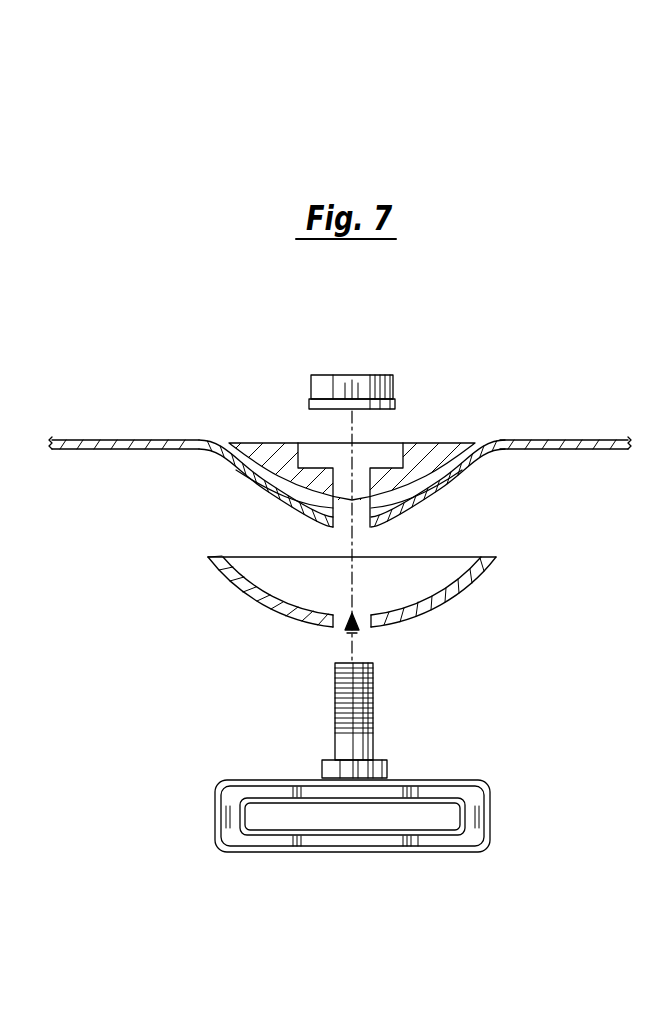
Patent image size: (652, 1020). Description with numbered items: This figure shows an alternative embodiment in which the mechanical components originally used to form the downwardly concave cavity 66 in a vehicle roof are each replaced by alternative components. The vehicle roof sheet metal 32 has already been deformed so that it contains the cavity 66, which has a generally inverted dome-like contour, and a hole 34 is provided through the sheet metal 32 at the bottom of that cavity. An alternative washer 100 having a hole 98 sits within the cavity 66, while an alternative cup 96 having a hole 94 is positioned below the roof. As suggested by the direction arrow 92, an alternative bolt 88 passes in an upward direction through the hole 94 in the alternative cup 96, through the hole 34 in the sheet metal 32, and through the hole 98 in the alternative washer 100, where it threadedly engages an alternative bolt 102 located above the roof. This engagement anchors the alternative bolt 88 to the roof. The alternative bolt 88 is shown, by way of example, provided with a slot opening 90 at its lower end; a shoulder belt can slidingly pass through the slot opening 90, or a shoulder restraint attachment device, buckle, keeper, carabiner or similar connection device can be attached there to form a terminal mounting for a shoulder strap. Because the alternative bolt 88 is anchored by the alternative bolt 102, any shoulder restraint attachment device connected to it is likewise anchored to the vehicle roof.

The vehicle roof sheet metal 32 is at (148, 440).
The hole in the sheet metal 34 is at (360, 530).
The cavity 66 is at (343, 508).
The alternative bolt 88 is at (335, 740).
The slot opening 90 is at (437, 817).
The direction arrow 92 is at (358, 646).
The hole in the alternative cup 94 is at (335, 628).
The alternative cup 96 is at (248, 594).
The hole in the alternative washer 98 is at (343, 478).
The alternative washer 100 is at (433, 502).
The alternative bolt 102 is at (395, 378).